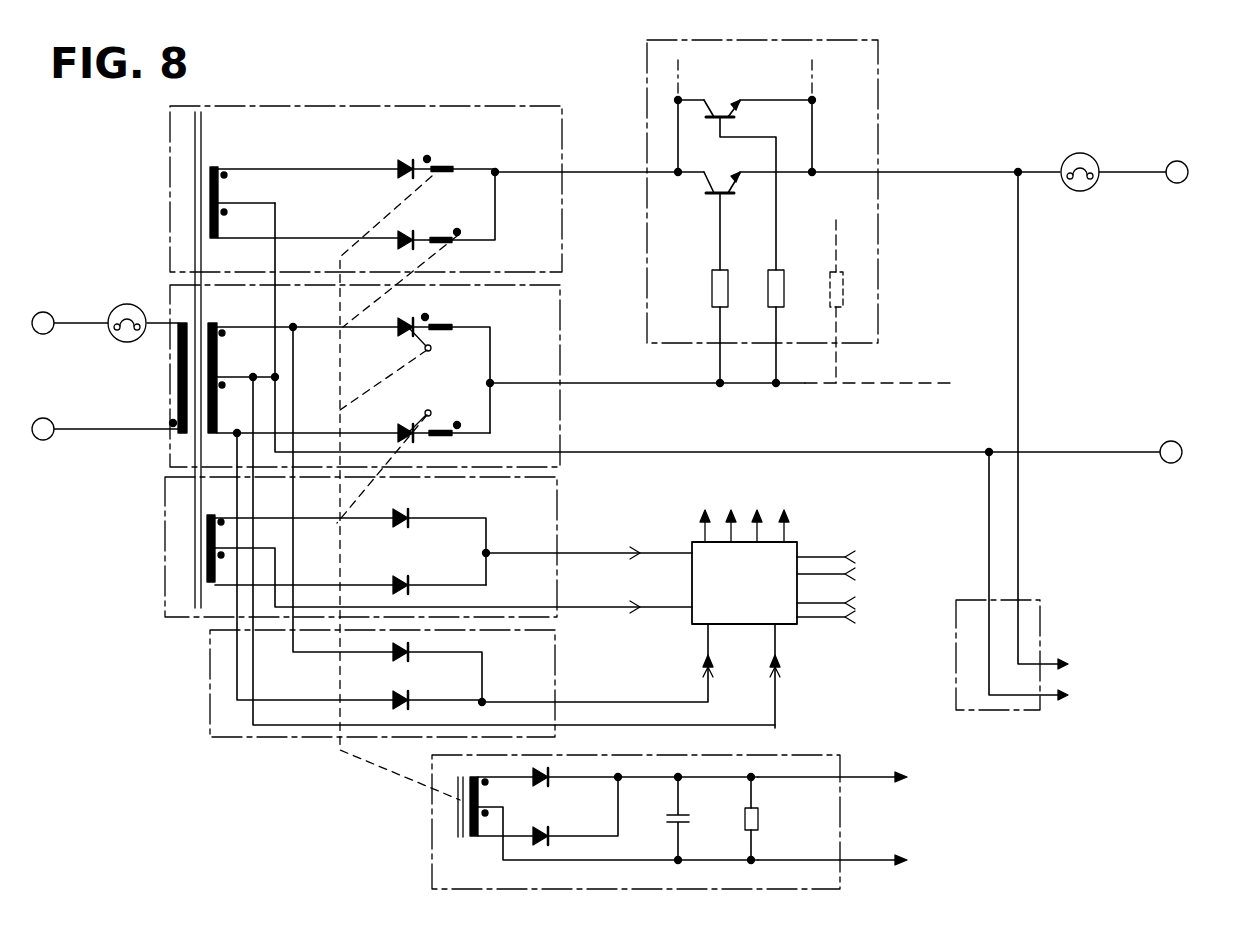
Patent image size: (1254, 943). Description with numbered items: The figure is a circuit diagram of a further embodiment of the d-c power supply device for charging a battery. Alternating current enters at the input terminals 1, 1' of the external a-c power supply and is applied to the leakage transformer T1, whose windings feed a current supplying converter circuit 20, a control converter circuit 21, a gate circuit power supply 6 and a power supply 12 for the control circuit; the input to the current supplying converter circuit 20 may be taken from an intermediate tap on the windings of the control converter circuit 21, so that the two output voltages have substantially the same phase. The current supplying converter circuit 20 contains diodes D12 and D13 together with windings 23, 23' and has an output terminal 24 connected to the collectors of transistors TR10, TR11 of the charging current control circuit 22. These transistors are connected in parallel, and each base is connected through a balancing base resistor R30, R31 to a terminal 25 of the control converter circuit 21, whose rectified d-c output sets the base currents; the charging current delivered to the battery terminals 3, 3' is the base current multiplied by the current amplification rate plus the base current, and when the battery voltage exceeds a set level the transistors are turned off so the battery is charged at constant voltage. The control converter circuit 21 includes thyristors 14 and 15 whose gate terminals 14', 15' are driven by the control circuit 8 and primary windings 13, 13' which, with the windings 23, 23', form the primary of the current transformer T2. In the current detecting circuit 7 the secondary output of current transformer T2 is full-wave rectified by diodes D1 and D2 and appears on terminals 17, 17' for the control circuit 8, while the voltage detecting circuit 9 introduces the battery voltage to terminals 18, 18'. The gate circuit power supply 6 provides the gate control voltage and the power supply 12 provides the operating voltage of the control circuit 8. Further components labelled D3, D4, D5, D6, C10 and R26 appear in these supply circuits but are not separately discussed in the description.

The current supplying converter circuit 20 is at (168, 180).
The control converter circuit 21 is at (168, 392).
The gate circuit power supply 6 is at (165, 550).
The leakage transformer T1 is at (192, 600).
The power supply for the control circuit 12 is at (210, 696).
The current detecting circuit 7 is at (432, 856).
The current transformer T2 is at (460, 838).
The charging current control circuit 22 is at (878, 120).
The control circuit 8 is at (800, 545).
The voltage detecting circuit 9 is at (1041, 606).
The battery terminal 3 is at (1144, 172).
The battery terminal 3' is at (1196, 451).
The input terminal 1 is at (89, 303).
The input terminal 1' is at (45, 403).
The primary winding 13 is at (466, 364).
The primary winding 13' is at (472, 419).
The thyristor 14 is at (378, 339).
The gate terminal 14' is at (561, 435).
The thyristor 15 is at (380, 419).
The gate terminal 15' is at (599, 464).
The winding 23 is at (454, 141).
The winding 23' is at (454, 207).
The output terminal 24 is at (497, 175).
The terminal 25 is at (489, 380).
The diode D12 is at (403, 162).
The diode D13 is at (403, 233).
The diode D3 is at (406, 524).
The diode D4 is at (410, 583).
The diode D5 is at (406, 658).
The diode D6 is at (412, 702).
The diode D1 is at (552, 781).
The diode D2 is at (552, 833).
The capacitor C10 is at (690, 815).
The resistor R26 is at (760, 818).
The balancing base resistor R30 is at (712, 282).
The balancing base resistor R31 is at (770, 268).
The transistor TR10 is at (720, 182).
The transistor TR11 is at (729, 108).
The terminal 17 is at (863, 692).
The terminal 17' is at (866, 743).
The terminal 18 is at (963, 426).
The terminal 18' is at (967, 582).